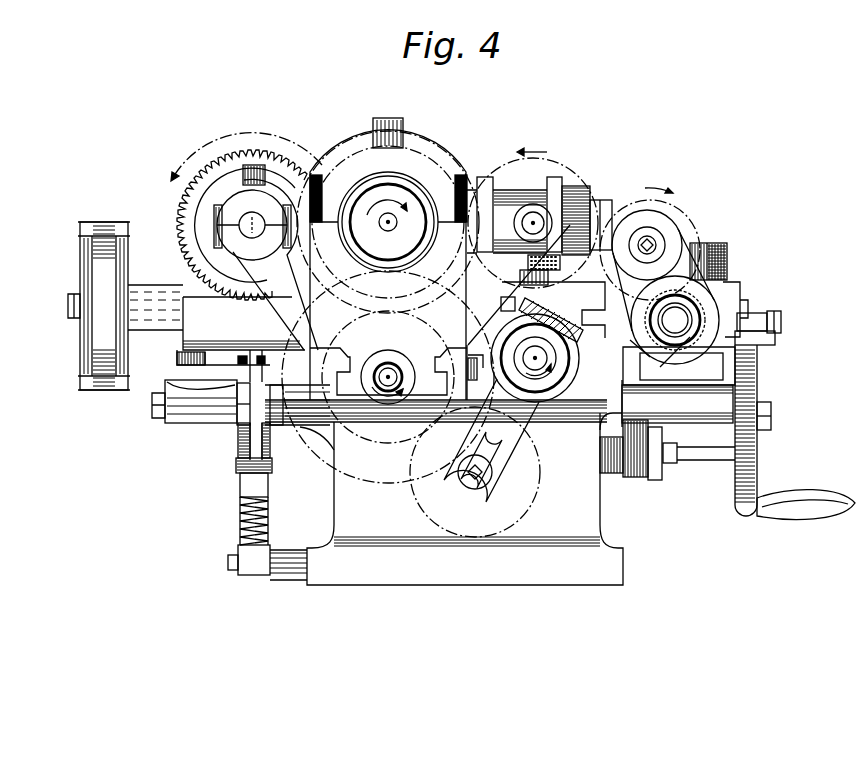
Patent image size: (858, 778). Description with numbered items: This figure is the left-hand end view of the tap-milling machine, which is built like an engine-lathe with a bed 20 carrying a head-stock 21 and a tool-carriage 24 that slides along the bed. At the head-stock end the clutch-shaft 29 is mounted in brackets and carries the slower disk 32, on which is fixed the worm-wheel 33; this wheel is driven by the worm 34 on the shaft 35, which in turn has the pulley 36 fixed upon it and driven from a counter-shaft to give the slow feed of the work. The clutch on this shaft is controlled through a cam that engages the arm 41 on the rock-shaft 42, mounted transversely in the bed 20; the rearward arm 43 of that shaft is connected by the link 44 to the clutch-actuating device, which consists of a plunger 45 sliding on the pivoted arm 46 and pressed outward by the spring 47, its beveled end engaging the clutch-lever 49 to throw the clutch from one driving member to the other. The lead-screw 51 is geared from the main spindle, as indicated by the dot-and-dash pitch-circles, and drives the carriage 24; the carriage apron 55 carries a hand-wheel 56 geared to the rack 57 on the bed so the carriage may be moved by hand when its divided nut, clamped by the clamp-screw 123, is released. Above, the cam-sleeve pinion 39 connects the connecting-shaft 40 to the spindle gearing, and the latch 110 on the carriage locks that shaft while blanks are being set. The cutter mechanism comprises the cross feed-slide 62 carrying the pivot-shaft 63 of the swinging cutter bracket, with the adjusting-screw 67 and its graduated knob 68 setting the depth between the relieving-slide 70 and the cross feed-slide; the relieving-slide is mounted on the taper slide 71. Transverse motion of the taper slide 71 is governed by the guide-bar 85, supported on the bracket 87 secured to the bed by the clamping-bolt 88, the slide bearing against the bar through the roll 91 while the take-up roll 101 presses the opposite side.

The bed 20 is at (444, 492).
The head-stock 21 is at (388, 300).
The tool-carriage 24 is at (775, 343).
The clutch-shaft 29 is at (262, 228).
The disk 32 is at (232, 148).
The worm-wheel 33 is at (280, 175).
The worm 34 is at (242, 298).
The shaft 35 is at (68, 306).
The pulley 36 is at (80, 253).
The pinion 39 is at (702, 307).
The connecting-shaft 40 is at (675, 320).
The arm 41 is at (733, 371).
The rock-shaft 42 is at (748, 405).
The arm 43 is at (250, 445).
The link 44 is at (272, 474).
The plunger 45 is at (270, 452).
The arm 46 is at (250, 580).
The spring 47 is at (240, 523).
The clutch-lever 49 is at (250, 372).
The lead-screw 51 is at (530, 372).
The apron 55 is at (660, 480).
The hand-wheel 56 is at (758, 468).
The rack 57 is at (612, 424).
The cross feed-slide 62 is at (507, 190).
The pivot-shaft 63 is at (615, 208).
The adjusting-screw 67 is at (660, 287).
The knob 68 is at (727, 252).
The relieving-slide 70 is at (553, 312).
The taper slide 71 is at (781, 321).
The guide-bar 85 is at (190, 372).
The bracket 87 is at (176, 427).
The clamping-bolt 88 is at (152, 406).
The roll 91 is at (178, 355).
The roll 101 is at (265, 360).
The latch 110 is at (740, 285).
The clamp-screw 123 is at (518, 312).